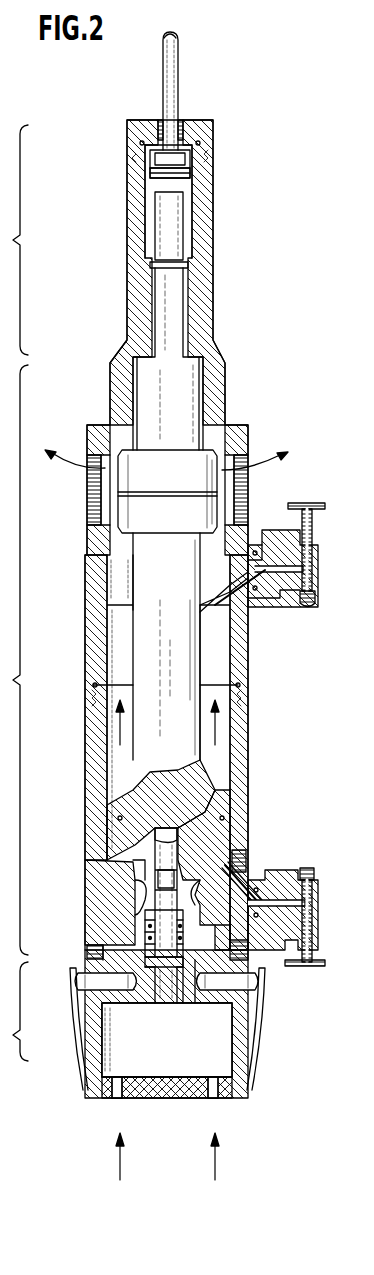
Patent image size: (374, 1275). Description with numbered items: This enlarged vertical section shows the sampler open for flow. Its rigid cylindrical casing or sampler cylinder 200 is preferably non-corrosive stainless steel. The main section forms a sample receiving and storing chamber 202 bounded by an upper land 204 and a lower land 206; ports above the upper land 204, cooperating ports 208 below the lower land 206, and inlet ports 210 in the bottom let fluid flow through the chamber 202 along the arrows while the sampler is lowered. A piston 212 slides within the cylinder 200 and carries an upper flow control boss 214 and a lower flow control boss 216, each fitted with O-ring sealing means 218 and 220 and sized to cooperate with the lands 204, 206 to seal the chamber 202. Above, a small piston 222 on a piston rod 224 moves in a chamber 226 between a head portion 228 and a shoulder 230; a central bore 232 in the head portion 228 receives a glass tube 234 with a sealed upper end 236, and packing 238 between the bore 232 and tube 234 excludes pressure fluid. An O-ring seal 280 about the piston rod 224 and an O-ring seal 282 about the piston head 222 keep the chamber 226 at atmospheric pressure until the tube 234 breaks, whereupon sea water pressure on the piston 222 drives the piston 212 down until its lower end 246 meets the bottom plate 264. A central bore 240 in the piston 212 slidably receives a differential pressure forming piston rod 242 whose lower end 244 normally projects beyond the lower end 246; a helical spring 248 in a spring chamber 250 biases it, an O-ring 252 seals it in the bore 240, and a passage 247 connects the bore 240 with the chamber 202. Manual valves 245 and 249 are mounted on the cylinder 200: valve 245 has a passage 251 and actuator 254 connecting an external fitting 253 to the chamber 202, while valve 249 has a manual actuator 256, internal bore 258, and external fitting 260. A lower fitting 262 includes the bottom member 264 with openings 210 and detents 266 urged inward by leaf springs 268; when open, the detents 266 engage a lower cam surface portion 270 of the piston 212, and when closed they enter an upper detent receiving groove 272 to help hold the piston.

The sampler cylinder 200 is at (228, 382).
The sample receiving and storing chamber 202 is at (235, 656).
The upper land 204 is at (108, 576).
The lower land 206 is at (86, 508).
The cooperating ports 208 is at (88, 952).
The inlet ports 210 is at (117, 1090).
The piston 212 is at (168, 651).
The upper flow control boss 214 is at (173, 481).
The lower flow control boss 216 is at (118, 810).
The O-ring sealing means 218 is at (240, 500).
The O-ring sealing means 220 is at (212, 812).
The small piston 222 is at (185, 160).
The piston rod 224 is at (170, 222).
The chamber 226 is at (192, 184).
The head portion 228 is at (133, 128).
The shoulder 230 is at (188, 263).
The bore 232 is at (160, 120).
The glass tube 234 is at (180, 80).
The sealed upper end 236 is at (172, 30).
The packing 238 is at (181, 120).
The central bore 240 is at (178, 835).
The differential pressure forming piston rod 242 is at (155, 850).
The lower end 244 is at (170, 1006).
The manual valve 245 is at (320, 576).
The lower end 246 is at (186, 993).
The passage 247 is at (210, 778).
The helical spring 248 is at (236, 952).
The manual valve 249 is at (318, 918).
The spring chamber 250 is at (150, 927).
The passage 251 is at (252, 600).
The O-ring 252 is at (158, 878).
The external fitting 253 is at (310, 606).
The actuator 254 is at (312, 520).
The manual actuator 256 is at (318, 970).
The internal bore 258 is at (252, 896).
The external fitting 260 is at (314, 874).
The fitting 262 is at (98, 1050).
The bottom member 264 is at (170, 1092).
The detents 266 is at (92, 985).
The leaf springs 268 is at (76, 1025).
The lower cam surface portion 270 is at (155, 992).
The upper detent receiving groove 272 is at (140, 888).
The O-ring seal 280 is at (158, 272).
The O-ring seal 282 is at (150, 174).